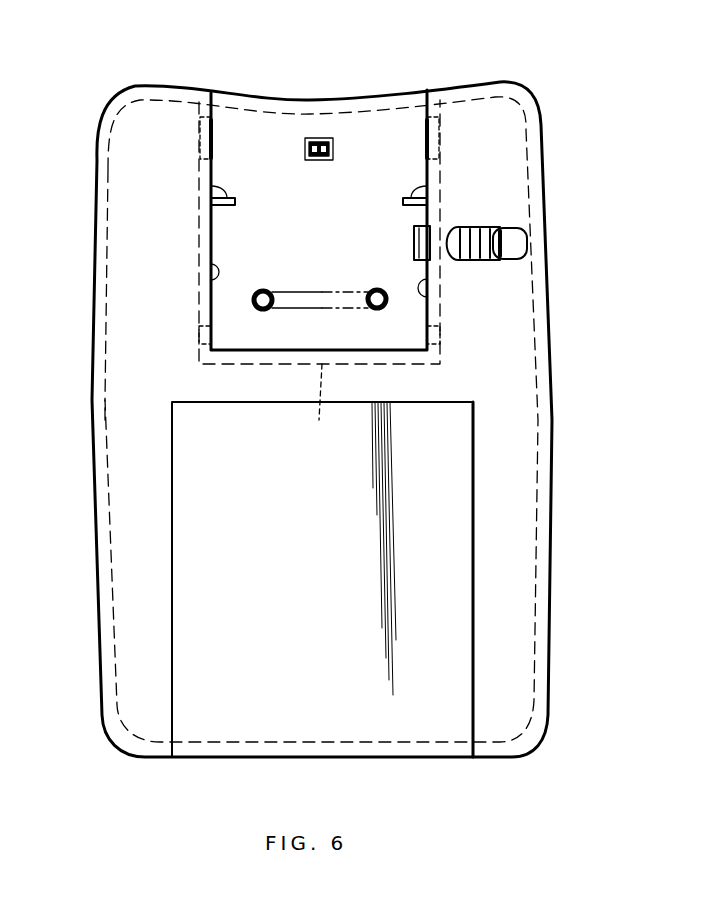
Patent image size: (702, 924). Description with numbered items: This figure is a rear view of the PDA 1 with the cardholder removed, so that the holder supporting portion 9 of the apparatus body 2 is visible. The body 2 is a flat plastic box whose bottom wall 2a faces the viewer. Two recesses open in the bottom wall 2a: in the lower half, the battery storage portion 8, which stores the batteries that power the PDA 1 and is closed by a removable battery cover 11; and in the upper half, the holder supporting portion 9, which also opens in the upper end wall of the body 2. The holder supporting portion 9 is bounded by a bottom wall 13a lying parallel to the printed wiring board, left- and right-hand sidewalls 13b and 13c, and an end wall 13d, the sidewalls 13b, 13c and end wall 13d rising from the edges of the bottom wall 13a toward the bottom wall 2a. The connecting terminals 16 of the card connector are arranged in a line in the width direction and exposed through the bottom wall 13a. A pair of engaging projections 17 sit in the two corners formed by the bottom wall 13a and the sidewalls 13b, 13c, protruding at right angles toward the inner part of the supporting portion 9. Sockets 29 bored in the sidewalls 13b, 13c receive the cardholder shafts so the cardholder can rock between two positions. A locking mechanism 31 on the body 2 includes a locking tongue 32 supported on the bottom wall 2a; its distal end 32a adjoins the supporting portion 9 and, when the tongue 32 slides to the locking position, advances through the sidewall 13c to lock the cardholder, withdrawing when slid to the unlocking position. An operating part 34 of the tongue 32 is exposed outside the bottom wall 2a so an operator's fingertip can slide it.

The PDA 1 is at (548, 68).
The apparatus body 2 is at (527, 403).
The bottom wall 2a is at (128, 415).
The battery storage portion 8 is at (188, 577).
The holder supporting portion 9 is at (396, 118).
The battery cover 11 is at (463, 577).
The bottom wall 13a is at (272, 128).
The left-hand sidewall 13b is at (200, 235).
The right-hand sidewall 13c is at (436, 163).
The end wall 13d is at (212, 282).
The connecting terminals 16 is at (263, 291).
The engaging projections 17 is at (226, 193).
The sockets 29 is at (206, 337).
The locking mechanism 31 is at (511, 218).
The locking tongue 32 is at (415, 233).
The distal end 32a is at (414, 248).
The operating part 34 is at (492, 242).